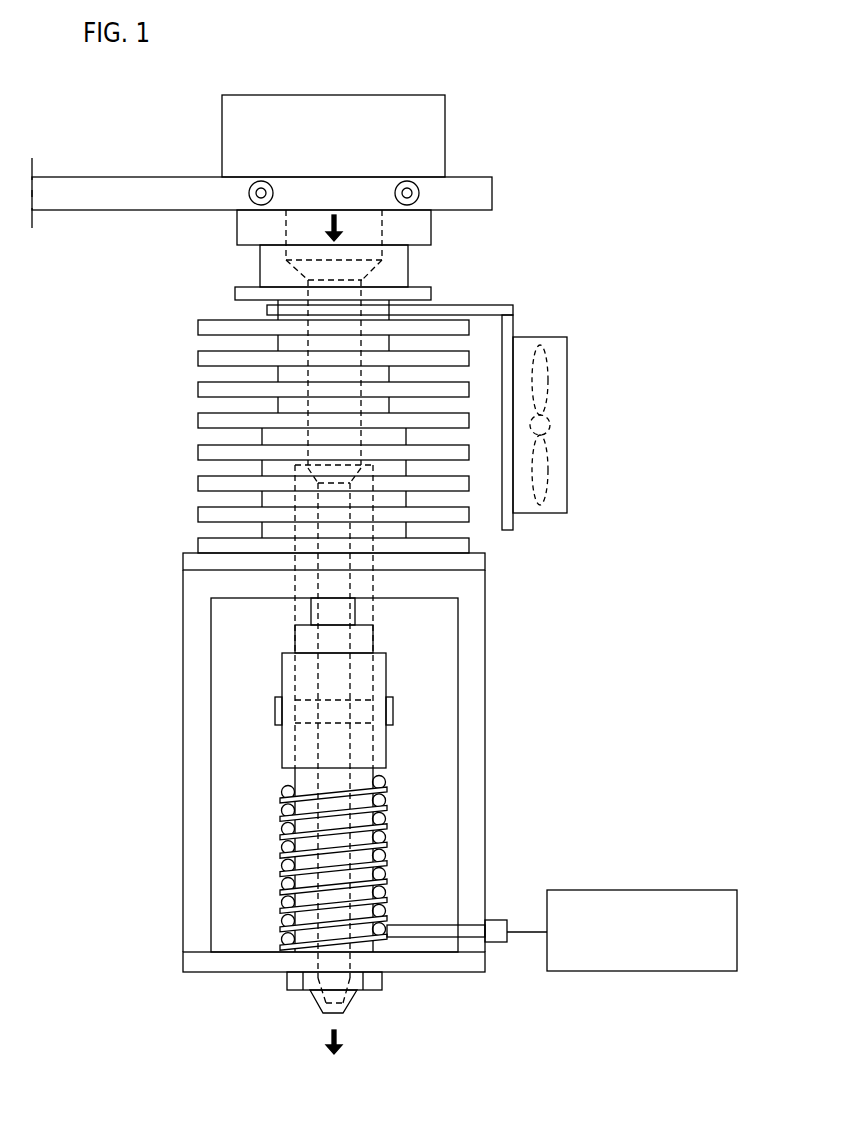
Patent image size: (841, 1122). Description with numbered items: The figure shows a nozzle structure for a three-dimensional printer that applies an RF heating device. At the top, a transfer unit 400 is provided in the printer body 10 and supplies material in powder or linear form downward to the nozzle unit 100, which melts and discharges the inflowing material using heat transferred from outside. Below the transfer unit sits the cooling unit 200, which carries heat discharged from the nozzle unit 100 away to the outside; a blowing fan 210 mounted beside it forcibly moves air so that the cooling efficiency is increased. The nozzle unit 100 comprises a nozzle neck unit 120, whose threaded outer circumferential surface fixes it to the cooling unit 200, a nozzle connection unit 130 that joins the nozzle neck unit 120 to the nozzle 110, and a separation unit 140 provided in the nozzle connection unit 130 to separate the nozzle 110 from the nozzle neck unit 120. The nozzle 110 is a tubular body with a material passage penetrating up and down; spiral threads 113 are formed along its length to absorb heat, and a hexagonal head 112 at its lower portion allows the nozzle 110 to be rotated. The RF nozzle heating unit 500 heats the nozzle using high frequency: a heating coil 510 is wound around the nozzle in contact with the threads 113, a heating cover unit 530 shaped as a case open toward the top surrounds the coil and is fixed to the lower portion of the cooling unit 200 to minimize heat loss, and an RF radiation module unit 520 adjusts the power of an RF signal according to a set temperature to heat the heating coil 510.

The 3D printer body 10 is at (78, 186).
The transfer unit 400 is at (445, 133).
The cooling unit 200 is at (176, 430).
The blowing fan 210 is at (544, 524).
The nozzle unit 100 is at (150, 758).
The nozzle neck unit 120 is at (305, 638).
The nozzle connection unit 130 is at (287, 675).
The separation unit 140 is at (275, 710).
The threads 113 is at (283, 801).
The nozzle 110 is at (303, 853).
The hexagonal head 112 is at (290, 980).
The RF nozzle heating unit 500 is at (460, 989).
The heating coil 510 is at (417, 932).
The heating cover unit 530 is at (470, 967).
The RF radiation module unit 520 is at (642, 965).